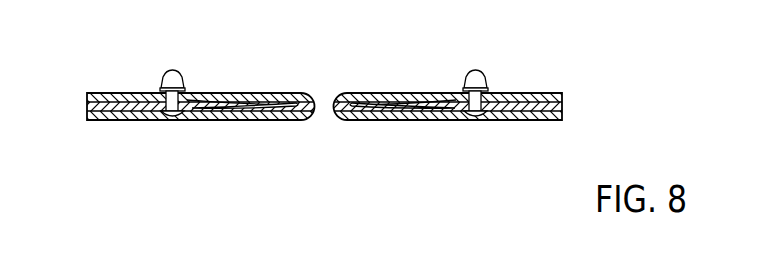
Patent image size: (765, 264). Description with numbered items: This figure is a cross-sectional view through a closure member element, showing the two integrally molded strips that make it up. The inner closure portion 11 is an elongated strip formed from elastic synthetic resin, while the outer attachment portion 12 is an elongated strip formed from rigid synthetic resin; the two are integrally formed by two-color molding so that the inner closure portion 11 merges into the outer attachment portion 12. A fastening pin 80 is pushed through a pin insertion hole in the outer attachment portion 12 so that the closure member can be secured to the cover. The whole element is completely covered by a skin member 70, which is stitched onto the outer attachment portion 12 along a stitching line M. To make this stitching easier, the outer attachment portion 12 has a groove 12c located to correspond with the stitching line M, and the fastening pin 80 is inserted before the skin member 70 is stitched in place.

The fastening pin 80 is at (171, 78).
The inner closure portion 11 is at (240, 106).
The skin member 70 is at (285, 92).
The outer attachment portion 12 is at (200, 118).
The groove 12c is at (125, 120).
The stitching line M is at (113, 93).